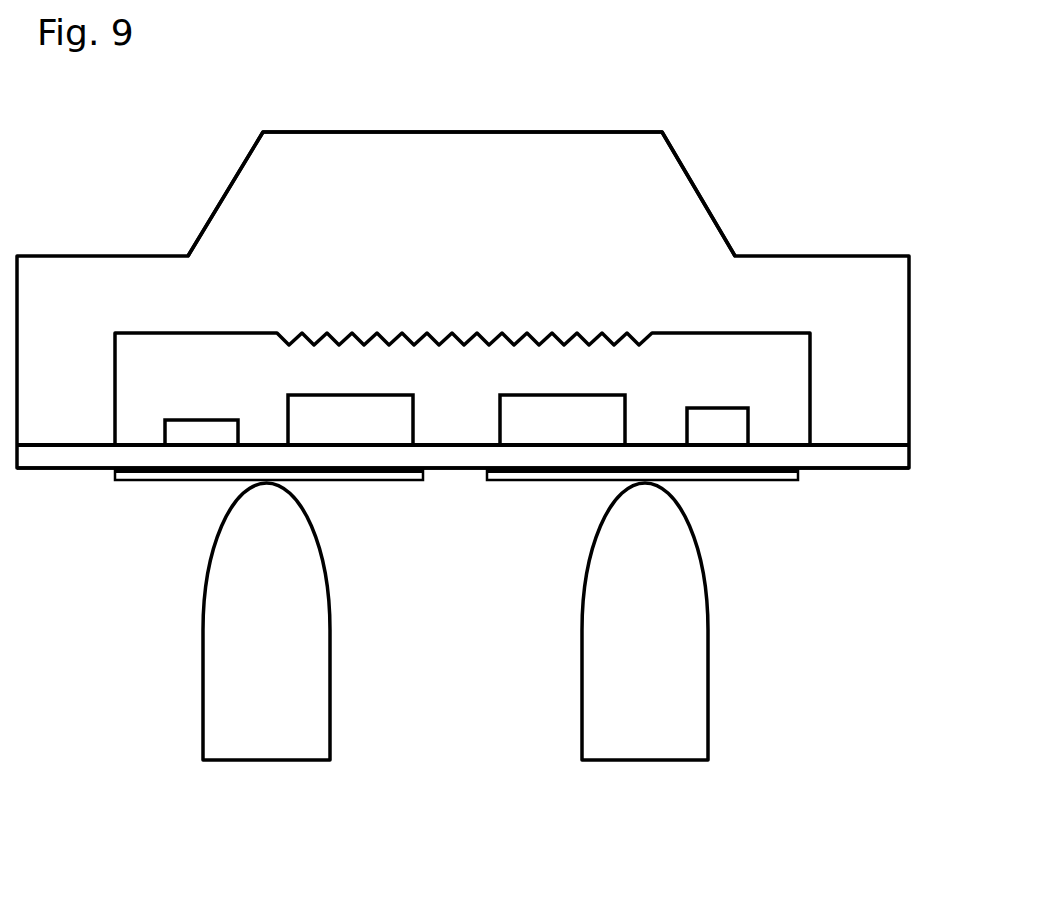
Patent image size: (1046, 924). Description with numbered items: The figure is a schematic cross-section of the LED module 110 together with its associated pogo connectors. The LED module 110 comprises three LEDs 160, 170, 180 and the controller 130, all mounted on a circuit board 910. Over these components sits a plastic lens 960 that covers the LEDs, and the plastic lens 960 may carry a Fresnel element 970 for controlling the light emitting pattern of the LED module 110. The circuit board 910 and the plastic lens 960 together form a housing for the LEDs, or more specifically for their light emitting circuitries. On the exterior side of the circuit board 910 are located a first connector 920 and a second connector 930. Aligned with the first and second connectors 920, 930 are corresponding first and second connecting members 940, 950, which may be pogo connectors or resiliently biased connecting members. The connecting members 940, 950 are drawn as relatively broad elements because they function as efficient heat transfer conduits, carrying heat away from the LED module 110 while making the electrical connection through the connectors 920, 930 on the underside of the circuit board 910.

The LED module 110 is at (160, 175).
The controller 130 is at (737, 425).
The LED 160 is at (379, 499).
The LED 170 is at (562, 499).
The LED 180 is at (160, 511).
The circuit board 910 is at (457, 524).
The first connector 920 is at (269, 536).
The second connector 930 is at (642, 536).
The first connecting member 940 is at (304, 679).
The second connecting member 950 is at (681, 679).
The plastic lens 960 is at (461, 158).
The Fresnel element 970 is at (475, 292).